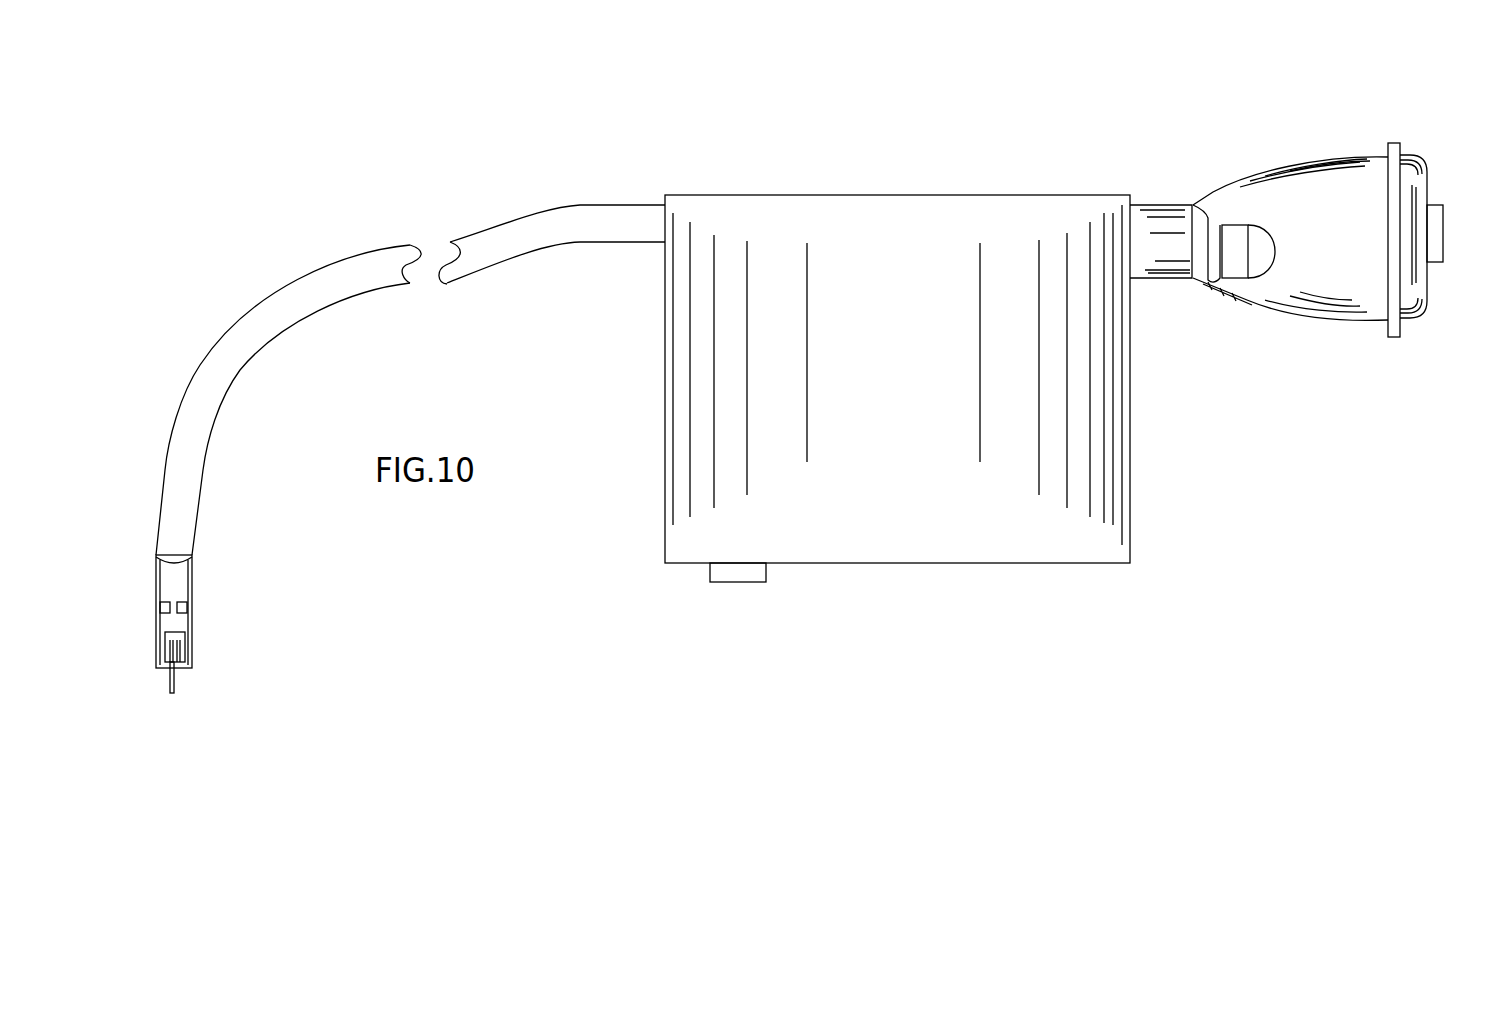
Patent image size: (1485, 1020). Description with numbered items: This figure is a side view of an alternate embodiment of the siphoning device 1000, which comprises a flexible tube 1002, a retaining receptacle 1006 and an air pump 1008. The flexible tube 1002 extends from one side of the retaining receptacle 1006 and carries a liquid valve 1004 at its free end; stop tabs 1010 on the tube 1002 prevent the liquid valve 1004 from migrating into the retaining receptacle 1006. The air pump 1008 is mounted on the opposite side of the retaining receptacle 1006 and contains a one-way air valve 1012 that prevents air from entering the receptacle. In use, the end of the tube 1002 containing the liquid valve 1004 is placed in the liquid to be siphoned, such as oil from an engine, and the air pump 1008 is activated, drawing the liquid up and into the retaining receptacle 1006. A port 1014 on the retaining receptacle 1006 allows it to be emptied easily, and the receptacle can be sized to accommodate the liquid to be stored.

The siphoning device 1000 is at (457, 190).
The flexible tube 1002 is at (175, 487).
The liquid valve 1004 is at (175, 640).
The retaining receptacle 1006 is at (1077, 417).
The air pump 1008 is at (1308, 208).
The stop tabs 1010 is at (187, 608).
The one-way air valve 1012 is at (1437, 228).
The port 1014 is at (735, 573).